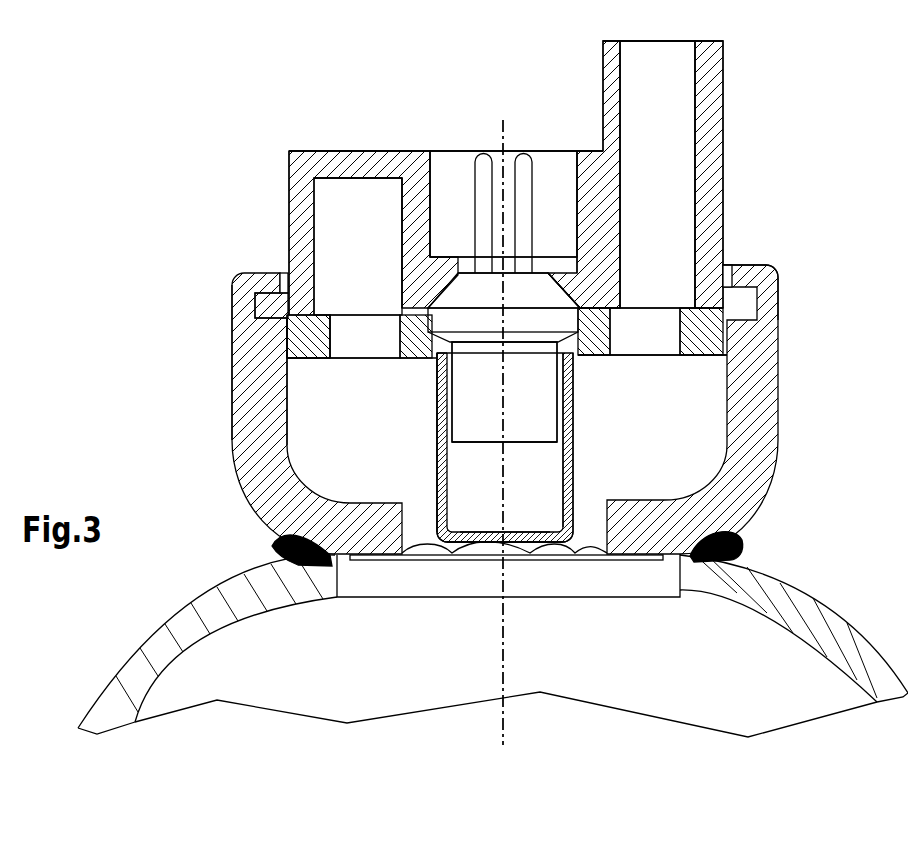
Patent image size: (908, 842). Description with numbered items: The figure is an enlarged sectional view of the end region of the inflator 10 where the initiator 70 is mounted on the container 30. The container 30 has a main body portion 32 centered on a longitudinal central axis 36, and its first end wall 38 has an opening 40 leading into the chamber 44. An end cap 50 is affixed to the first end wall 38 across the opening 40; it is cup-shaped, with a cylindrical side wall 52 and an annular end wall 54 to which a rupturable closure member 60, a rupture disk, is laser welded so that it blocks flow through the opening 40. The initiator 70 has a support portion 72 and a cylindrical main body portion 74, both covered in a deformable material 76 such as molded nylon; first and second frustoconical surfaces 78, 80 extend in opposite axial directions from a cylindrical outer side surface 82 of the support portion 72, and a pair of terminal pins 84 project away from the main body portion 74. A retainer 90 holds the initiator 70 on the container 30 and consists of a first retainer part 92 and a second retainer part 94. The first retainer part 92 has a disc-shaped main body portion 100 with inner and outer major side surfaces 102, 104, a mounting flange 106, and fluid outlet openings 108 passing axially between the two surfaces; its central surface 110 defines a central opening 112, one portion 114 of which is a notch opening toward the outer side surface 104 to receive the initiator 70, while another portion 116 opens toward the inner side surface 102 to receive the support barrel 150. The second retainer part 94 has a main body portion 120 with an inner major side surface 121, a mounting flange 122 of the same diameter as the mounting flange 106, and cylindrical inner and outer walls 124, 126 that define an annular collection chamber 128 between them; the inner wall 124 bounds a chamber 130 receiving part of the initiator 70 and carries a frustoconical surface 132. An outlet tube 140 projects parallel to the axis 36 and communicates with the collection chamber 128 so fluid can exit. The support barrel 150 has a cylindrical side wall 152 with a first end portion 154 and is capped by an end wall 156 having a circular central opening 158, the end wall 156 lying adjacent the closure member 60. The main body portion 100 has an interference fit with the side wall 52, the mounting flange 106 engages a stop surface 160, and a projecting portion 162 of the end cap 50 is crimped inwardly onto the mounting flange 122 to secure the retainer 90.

The inflator 10 is at (140, 421).
The container 30 is at (93, 683).
The main body portion 32 is at (128, 648).
The longitudinal central axis 36 is at (505, 738).
The first end wall 38 is at (202, 602).
The opening 40 is at (343, 598).
The chamber 44 is at (422, 687).
The end cap 50 is at (236, 493).
The side wall 52 is at (262, 426).
The end wall 54 is at (362, 528).
The rupturable closure member 60 is at (416, 572).
The initiator 70 is at (441, 402).
The support portion 72 is at (590, 286).
The main body portion 74 is at (543, 443).
The deformable material 76 is at (547, 423).
The first frustoconical surface 78 is at (578, 258).
The second frustoconical surface 80 is at (600, 340).
The cylindrical outer side surface 82 is at (592, 326).
The terminal pins 84 is at (522, 157).
The retainer 90 is at (743, 126).
The first retainer part 92 is at (272, 356).
The second retainer part 94 is at (363, 142).
The main body portion 100 is at (307, 340).
The inner major side surface 102 is at (306, 362).
The outer major side surface 104 is at (324, 314).
The mounting flange 106 is at (254, 320).
The fluid outlet openings 108 is at (361, 348).
The central surface 110 is at (448, 339).
The central opening 112 is at (553, 322).
The portion of central opening 114 is at (434, 322).
The portion of central opening 116 is at (440, 366).
The main body portion 120 is at (409, 150).
The inner major side surface 121 is at (690, 314).
The mounting flange 122 is at (253, 300).
The inner wall 124 is at (418, 214).
The outer wall 126 is at (300, 190).
The collection chamber 128 is at (340, 244).
The chamber 130 is at (457, 165).
The frustoconical surface 132 is at (470, 270).
The outlet tube 140 is at (726, 62).
The support barrel 150 is at (428, 447).
The side wall 152 is at (438, 478).
The first end portion 154 is at (576, 368).
The end wall 156 is at (465, 538).
The central opening 158 is at (531, 538).
The stop surface 160 is at (780, 315).
The projecting portion 162 is at (738, 270).